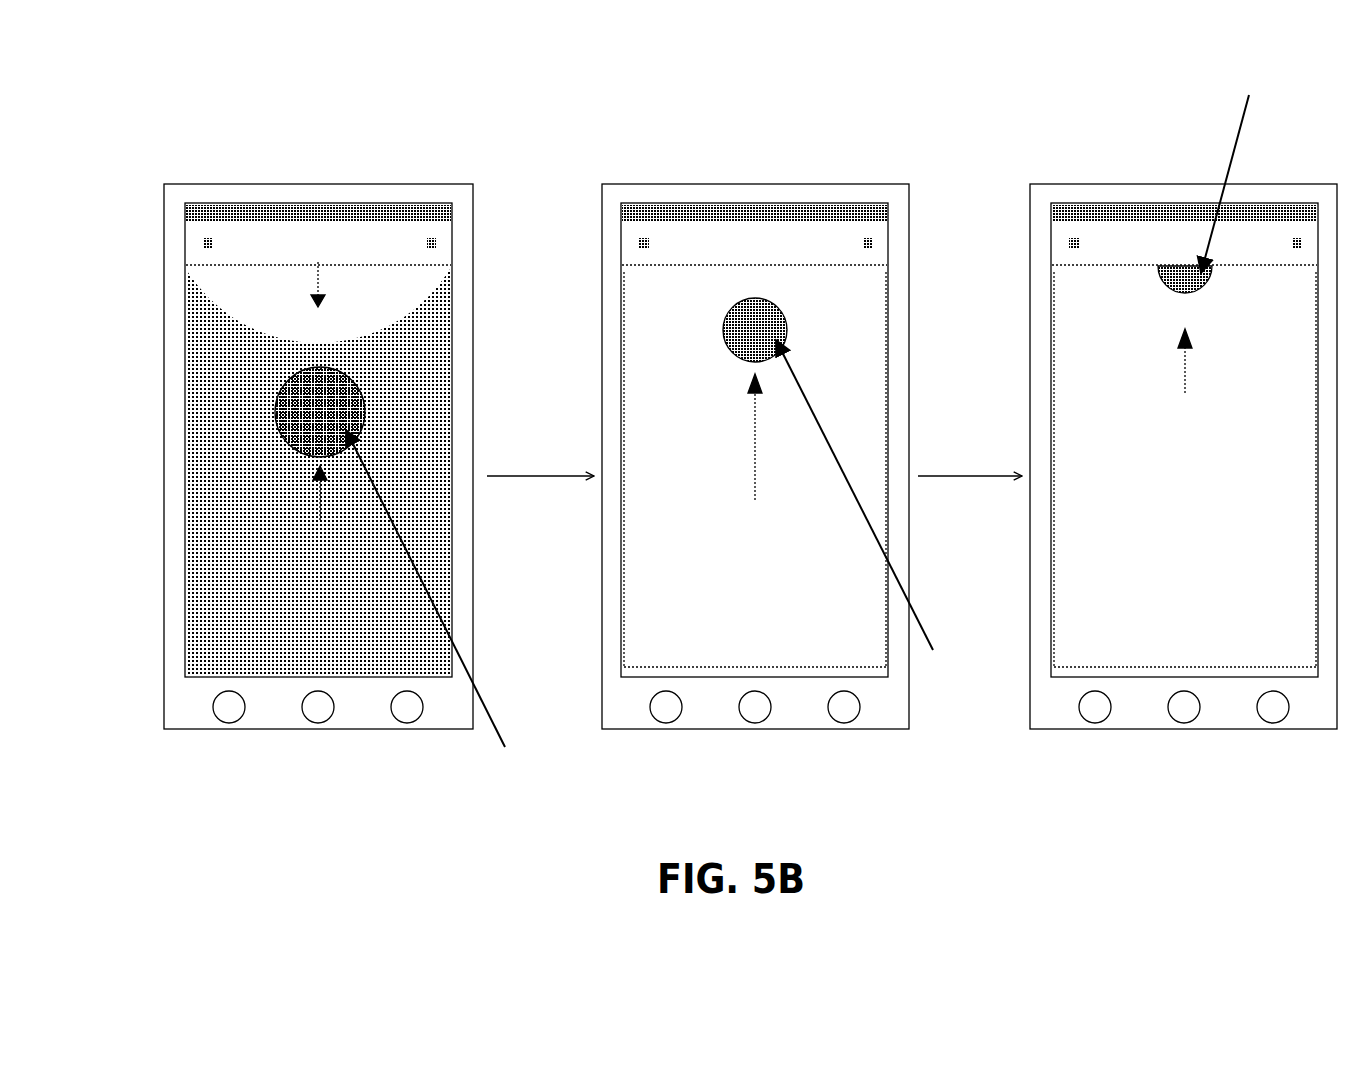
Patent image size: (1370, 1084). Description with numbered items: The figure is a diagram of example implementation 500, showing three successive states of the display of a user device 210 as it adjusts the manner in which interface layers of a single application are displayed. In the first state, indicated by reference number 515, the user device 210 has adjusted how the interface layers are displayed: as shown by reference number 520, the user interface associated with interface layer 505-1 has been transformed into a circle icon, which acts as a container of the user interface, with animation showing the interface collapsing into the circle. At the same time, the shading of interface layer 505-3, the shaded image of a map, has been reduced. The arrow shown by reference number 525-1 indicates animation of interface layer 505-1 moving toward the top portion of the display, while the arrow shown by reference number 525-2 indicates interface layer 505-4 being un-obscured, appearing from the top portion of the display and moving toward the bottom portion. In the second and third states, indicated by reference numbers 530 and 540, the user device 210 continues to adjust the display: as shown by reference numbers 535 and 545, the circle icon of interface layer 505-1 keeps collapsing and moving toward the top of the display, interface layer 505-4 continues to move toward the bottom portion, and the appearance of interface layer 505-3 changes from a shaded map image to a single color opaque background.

The example implementation 500 is at (258, 48).
The user device 210 is at (398, 767).
The adjusted display of interface layers 515 is at (318, 183).
The continued adjustment of interface layers 530 is at (757, 183).
The continued adjustment of interface layers 540 is at (1186, 183).
The interface layer 505-1 is at (292, 389).
The interface layer 505-3 is at (537, 566).
The interface layer 505-4 is at (521, 291).
The arrow 525-1 is at (320, 490).
The arrow 525-2 is at (318, 279).
The transformation of interface layer into circle icon 520 is at (539, 784).
The continued collapsing animation 535 is at (969, 689).
The continued collapsing animation 545 is at (1273, 94).